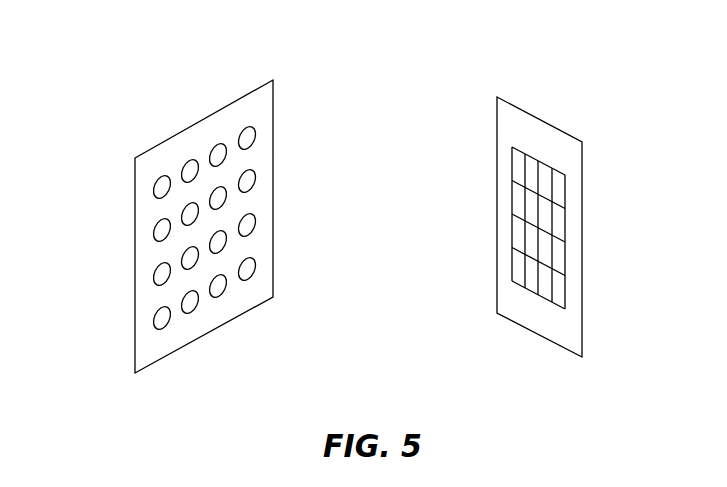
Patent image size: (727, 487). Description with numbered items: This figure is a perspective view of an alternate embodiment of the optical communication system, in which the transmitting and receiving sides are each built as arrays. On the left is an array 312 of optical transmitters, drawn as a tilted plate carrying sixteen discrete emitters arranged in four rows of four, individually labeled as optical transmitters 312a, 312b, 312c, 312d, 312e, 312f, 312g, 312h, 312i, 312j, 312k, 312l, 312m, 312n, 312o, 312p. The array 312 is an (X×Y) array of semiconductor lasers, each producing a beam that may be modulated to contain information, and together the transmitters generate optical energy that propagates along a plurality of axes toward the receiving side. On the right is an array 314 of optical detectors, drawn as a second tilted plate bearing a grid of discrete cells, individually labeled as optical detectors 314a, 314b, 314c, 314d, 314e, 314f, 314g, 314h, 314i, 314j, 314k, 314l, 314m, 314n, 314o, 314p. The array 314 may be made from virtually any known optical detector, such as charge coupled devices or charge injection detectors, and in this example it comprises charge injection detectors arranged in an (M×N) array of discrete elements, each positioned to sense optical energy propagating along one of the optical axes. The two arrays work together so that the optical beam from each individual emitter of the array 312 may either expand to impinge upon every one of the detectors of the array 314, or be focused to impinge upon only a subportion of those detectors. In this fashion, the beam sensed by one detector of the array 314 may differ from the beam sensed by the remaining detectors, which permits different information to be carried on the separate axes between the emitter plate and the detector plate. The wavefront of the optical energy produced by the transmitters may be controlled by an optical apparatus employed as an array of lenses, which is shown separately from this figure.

The array of optical transmitters 312 is at (274, 92).
The optical transmitter 312a is at (150, 190).
The optical transmitter 312b is at (194, 160).
The optical transmitter 312c is at (222, 144).
The optical transmitter 312d is at (249, 127).
The optical transmitter 312e is at (154, 235).
The optical transmitter 312f is at (183, 212).
The optical transmitter 312g is at (226, 200).
The optical transmitter 312h is at (256, 178).
The optical transmitter 312i is at (153, 280).
The optical transmitter 312j is at (182, 259).
The optical transmitter 312k is at (226, 245).
The optical transmitter 312l is at (255, 226).
The optical transmitter 312m is at (153, 323).
The optical transmitter 312n is at (190, 314).
The optical transmitter 312o is at (218, 298).
The optical transmitter 312p is at (247, 283).
The array of optical detectors 314 is at (497, 118).
The optical detector 314a is at (518, 162).
The optical detector 314b is at (532, 167).
The optical detector 314c is at (545, 172).
The optical detector 314d is at (558, 177).
The optical detector 314e is at (516, 203).
The optical detector 314f is at (531, 201).
The optical detector 314g is at (548, 222).
The optical detector 314h is at (560, 233).
The optical detector 314i is at (533, 233).
The optical detector 314j is at (524, 238).
The optical detector 314k is at (558, 252).
The optical detector 314l is at (545, 258).
The optical detector 314m is at (518, 275).
The optical detector 314n is at (532, 282).
The optical detector 314o is at (545, 290).
The optical detector 314p is at (560, 293).